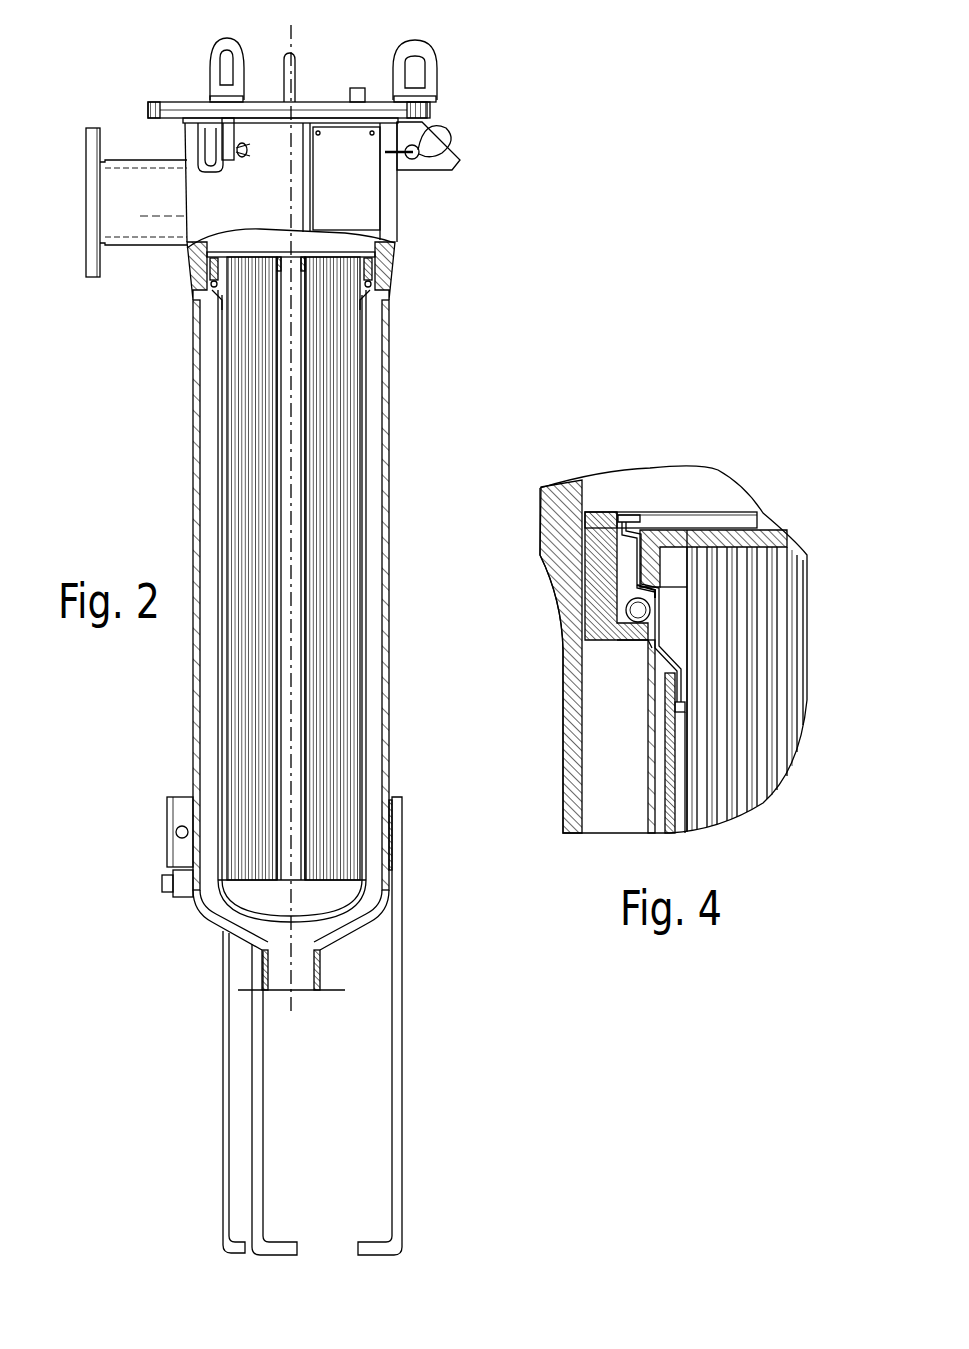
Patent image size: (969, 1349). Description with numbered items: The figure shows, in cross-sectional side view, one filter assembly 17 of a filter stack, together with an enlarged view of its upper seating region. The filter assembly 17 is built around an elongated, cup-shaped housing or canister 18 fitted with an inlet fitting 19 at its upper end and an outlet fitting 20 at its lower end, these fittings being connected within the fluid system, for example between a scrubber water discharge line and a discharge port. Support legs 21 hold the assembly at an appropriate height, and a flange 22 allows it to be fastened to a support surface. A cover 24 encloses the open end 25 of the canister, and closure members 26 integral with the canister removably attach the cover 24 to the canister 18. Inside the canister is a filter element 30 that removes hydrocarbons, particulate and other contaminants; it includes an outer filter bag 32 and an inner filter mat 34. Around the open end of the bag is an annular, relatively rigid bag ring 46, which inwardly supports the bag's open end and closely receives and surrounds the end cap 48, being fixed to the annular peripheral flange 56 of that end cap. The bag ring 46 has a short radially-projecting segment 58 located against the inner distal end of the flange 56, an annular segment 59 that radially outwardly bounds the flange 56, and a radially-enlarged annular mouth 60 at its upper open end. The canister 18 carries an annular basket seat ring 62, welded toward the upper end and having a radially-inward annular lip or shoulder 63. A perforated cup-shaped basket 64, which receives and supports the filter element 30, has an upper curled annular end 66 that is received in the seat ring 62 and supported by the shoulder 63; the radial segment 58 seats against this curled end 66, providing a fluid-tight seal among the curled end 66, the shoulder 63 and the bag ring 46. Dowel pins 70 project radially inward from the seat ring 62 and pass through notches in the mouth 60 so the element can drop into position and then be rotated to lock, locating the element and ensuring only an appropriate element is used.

In FIG. 2, the filter assembly 17 is at (492, 217).
In FIG. 2, the housing or canister 18 is at (392, 433).
In FIG. 2, the inlet fitting 19 is at (86, 242).
In FIG. 2, the outlet fitting 20 is at (305, 968).
In FIG. 2, the support legs 21 is at (392, 1060).
In FIG. 2, the flange 22 is at (167, 832).
In FIG. 2, the cover 24 is at (172, 103).
In FIG. 2, the open end 25 is at (160, 130).
In FIG. 2, the closure members 26 is at (212, 60).
In FIG. 2, the filter element 30 is at (360, 345).
In FIG. 4, the outer filter bag 32 is at (668, 812).
In FIG. 4, the inner filter mat 34 is at (753, 747).
In FIG. 4, the bag ring 46 is at (676, 692).
In FIG. 4, the end cap 48 is at (752, 530).
In FIG. 4, the annular peripheral flange 56 is at (636, 560).
In FIG. 4, the radially-projecting segment 58 is at (663, 557).
In FIG. 4, the annular segment 59 is at (647, 585).
In FIG. 4, the radially-enlarged annular mouth 60 is at (618, 517).
In FIG. 4, the basket seat ring 62 is at (592, 615).
In FIG. 4, the annular lip or shoulder 63 is at (632, 642).
In FIG. 4, the basket 64 is at (650, 737).
In FIG. 4, the curled annular end 66 is at (632, 630).
In FIG. 4, the dowel pins 70 is at (622, 514).